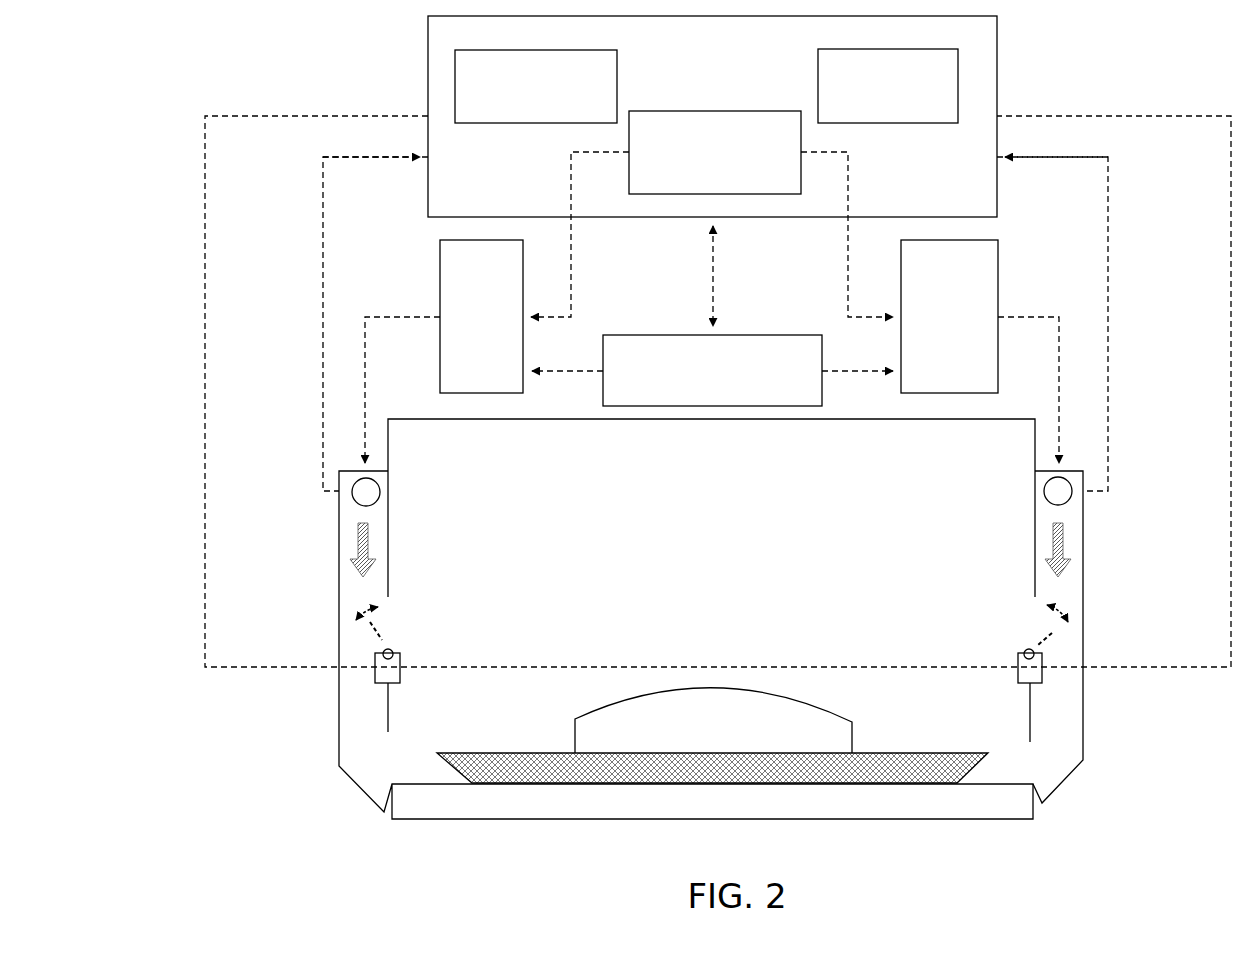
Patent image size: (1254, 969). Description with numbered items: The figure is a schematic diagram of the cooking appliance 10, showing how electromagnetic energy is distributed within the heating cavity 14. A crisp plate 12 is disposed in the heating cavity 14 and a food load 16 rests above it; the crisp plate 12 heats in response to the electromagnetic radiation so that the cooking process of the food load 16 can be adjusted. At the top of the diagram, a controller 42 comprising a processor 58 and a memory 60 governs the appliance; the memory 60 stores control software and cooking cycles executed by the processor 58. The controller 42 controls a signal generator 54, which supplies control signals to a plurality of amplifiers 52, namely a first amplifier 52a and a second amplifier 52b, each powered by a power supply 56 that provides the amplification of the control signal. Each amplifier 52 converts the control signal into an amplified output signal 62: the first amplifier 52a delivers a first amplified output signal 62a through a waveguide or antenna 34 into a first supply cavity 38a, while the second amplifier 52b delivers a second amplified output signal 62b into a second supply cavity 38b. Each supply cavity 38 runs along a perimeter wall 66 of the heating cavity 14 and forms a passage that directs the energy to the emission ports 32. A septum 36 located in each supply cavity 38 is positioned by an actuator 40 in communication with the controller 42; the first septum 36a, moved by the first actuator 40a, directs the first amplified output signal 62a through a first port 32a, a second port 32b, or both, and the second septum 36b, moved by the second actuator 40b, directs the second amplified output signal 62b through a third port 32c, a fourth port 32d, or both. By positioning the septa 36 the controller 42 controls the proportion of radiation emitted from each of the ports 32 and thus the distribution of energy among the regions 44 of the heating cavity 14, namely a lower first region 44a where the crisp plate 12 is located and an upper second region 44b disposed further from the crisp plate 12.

The cooking appliance 10 is at (297, 73).
The crisp plate 12 is at (547, 767).
The heating cavity 14 is at (711, 512).
The food load 16 is at (712, 698).
The emission ports 32 is at (708, 688).
The first port 32a is at (1039, 765).
The second port 32b is at (1019, 590).
The third port 32c is at (378, 765).
The fourth port 32d is at (403, 597).
The waveguide or antenna 34 is at (350, 470).
The septum 36 is at (707, 632).
The first septum 36a is at (1045, 636).
The second septum 36b is at (381, 646).
The supply cavity 38 is at (716, 645).
The first supply cavity 38a is at (1079, 519).
The second supply cavity 38b is at (343, 506).
The actuator 40 is at (708, 681).
The first actuator 40a is at (1020, 665).
The second actuator 40b is at (400, 668).
The controller 42 is at (712, 116).
The regions 44 is at (815, 594).
The first region 44a is at (925, 704).
The second region 44b is at (705, 491).
The amplifier 52 is at (712, 307).
The first amplifier 52a is at (930, 307).
The second amplifier 52b is at (497, 307).
The signal generator 54 is at (715, 152).
The power supply 56 is at (712, 316).
The processor 58 is at (536, 86).
The memory 60 is at (888, 86).
The amplified output signal 62 is at (719, 552).
The first amplified output signal 62a is at (1062, 547).
The second amplified output signal 62b is at (359, 552).
The perimeter wall 66 is at (389, 442).